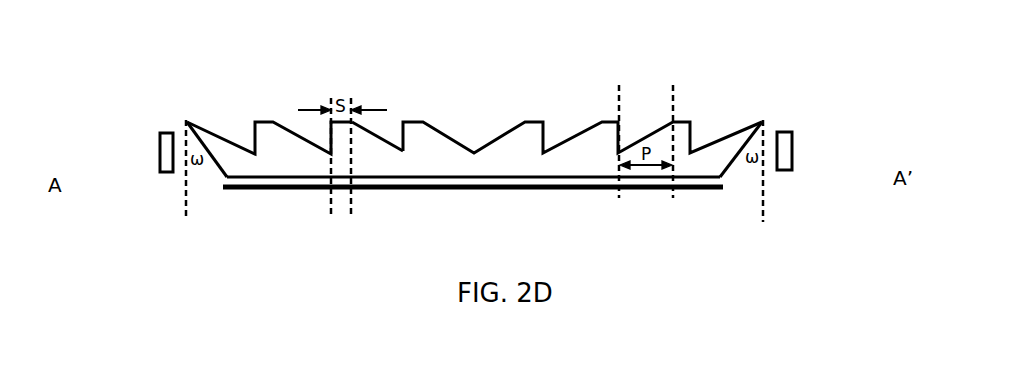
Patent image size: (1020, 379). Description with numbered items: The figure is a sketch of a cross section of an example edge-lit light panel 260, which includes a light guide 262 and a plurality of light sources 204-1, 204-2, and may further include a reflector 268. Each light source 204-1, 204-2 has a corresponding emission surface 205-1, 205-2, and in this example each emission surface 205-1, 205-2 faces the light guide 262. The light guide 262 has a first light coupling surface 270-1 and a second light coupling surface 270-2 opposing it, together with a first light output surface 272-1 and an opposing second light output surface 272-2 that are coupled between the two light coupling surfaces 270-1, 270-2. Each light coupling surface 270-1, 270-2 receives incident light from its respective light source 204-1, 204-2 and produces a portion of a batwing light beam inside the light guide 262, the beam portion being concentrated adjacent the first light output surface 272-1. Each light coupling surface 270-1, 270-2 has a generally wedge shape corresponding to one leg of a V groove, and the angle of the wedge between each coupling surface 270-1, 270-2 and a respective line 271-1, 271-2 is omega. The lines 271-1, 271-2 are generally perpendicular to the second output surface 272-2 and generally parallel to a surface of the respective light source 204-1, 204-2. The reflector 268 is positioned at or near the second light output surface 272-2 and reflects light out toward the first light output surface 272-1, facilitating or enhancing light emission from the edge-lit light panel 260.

The edge-lit light panel 260 is at (72, 85).
The light guide 262 is at (284, 167).
The reflector 268 is at (592, 193).
The first light coupling surface 270-1 is at (214, 170).
The second light coupling surface 270-2 is at (733, 152).
The line 271-1 is at (186, 213).
The line 271-2 is at (763, 200).
The first light output surface 272-1 is at (384, 143).
The second light output surface 272-2 is at (436, 179).
The light source 204-1 is at (146, 150).
The light source 204-2 is at (804, 150).
The emission surface 205-1 is at (177, 162).
The emission surface 205-2 is at (774, 148).